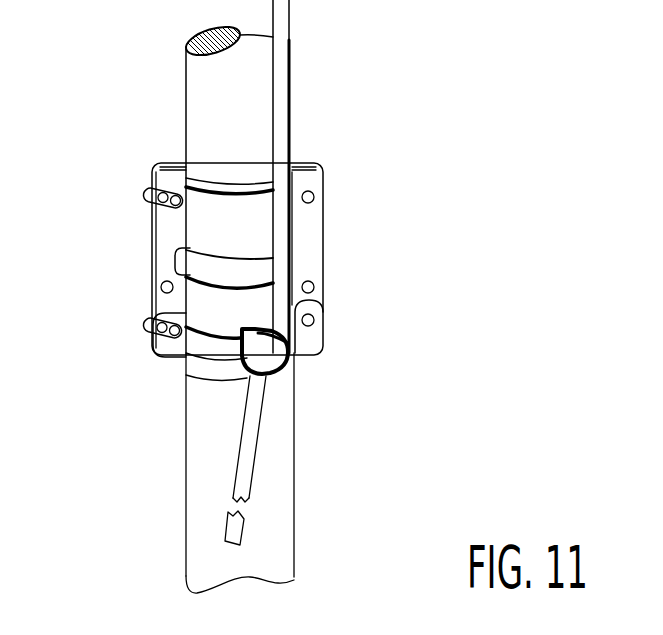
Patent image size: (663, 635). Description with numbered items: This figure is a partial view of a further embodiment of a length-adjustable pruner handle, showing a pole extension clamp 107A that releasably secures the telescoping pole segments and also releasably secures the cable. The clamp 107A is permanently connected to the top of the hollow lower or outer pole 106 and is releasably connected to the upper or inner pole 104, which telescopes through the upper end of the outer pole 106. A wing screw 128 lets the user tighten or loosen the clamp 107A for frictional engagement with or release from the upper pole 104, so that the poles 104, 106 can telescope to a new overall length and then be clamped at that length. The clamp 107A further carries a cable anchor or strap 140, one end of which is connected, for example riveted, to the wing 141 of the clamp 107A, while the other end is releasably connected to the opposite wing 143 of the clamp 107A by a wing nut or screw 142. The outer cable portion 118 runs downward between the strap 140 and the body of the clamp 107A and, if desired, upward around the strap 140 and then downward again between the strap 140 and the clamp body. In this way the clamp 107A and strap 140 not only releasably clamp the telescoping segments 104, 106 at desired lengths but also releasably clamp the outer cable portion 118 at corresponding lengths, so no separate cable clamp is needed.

The inner pole 104 is at (200, 93).
The outer pole 106 is at (278, 468).
The pole extension clamp 107A is at (294, 260).
The outer cable portion 118 is at (284, 16).
The wing screw 128 is at (148, 193).
The strap 140 is at (204, 350).
The wing 141 is at (317, 267).
The wing nut or screw 142 is at (150, 327).
The wing 143 is at (157, 249).